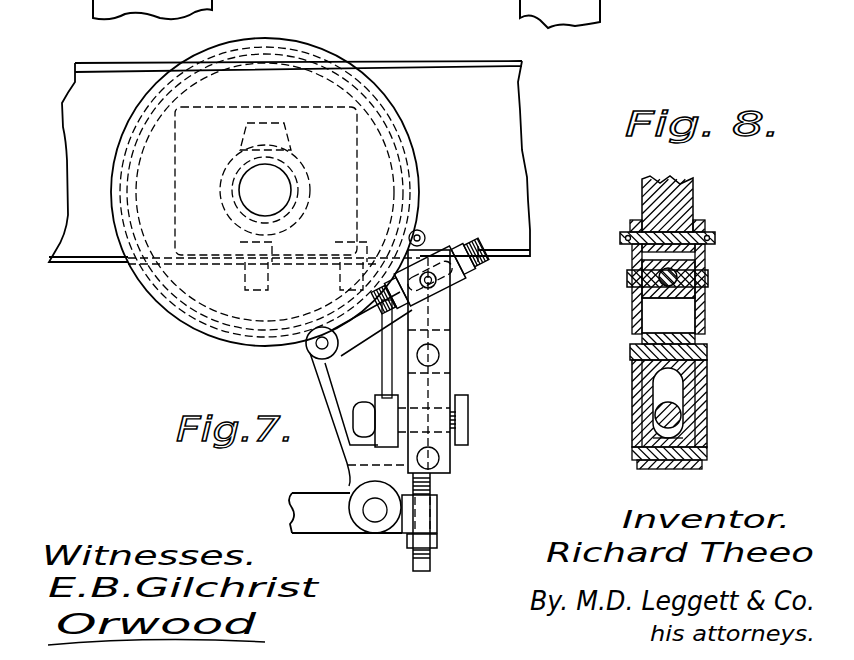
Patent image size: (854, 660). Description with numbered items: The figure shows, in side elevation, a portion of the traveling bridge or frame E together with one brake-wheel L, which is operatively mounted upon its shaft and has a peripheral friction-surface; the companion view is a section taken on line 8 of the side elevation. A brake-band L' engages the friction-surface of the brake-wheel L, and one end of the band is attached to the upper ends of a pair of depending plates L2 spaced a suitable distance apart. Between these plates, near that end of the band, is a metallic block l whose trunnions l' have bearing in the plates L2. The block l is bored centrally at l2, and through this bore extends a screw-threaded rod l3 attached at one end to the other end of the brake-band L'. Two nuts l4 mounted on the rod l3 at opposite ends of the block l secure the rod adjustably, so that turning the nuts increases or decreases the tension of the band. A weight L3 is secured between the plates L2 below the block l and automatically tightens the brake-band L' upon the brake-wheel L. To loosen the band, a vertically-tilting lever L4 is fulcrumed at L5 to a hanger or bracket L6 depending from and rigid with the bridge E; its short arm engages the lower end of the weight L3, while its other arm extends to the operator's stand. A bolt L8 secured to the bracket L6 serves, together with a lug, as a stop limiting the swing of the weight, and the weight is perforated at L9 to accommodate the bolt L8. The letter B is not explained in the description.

In FIG. 7, the traveling bridge or frame E is at (289, 162).
In FIG. 7, the brake-wheel L is at (265, 208).
In FIG. 7, the brake-band L' is at (257, 232).
In FIG. 8, the brake-band L' is at (682, 204).
In FIG. 7, the section line 8 is at (419, 234).
In FIG. 7, the depending plates L2 is at (429, 361).
In FIG. 8, the depending plates L2 is at (590, 440).
In FIG. 7, the metallic block l is at (429, 276).
In FIG. 8, the metallic block l is at (686, 288).
In FIG. 7, the trunnions l' is at (457, 291).
In FIG. 8, the trunnions l' is at (652, 289).
In FIG. 8, the bore l2 is at (656, 287).
In FIG. 7, the screw-threaded rod l3 is at (366, 336).
In FIG. 8, the screw-threaded rod l3 is at (636, 270).
In FIG. 7, the nuts l4 is at (466, 268).
In FIG. 8, the weight L3 is at (700, 432).
In FIG. 7, the vertically-tilting lever L4 is at (345, 513).
In FIG. 7, the fulcrum L5 is at (372, 514).
In FIG. 7, the hanger or bracket L6 is at (356, 406).
In FIG. 7, the bolt L8 is at (469, 418).
In FIG. 8, the bolt L8 is at (656, 410).
In FIG. 8, the perforation L9 is at (664, 380).
In FIG. 7, the bolt B is at (407, 458).